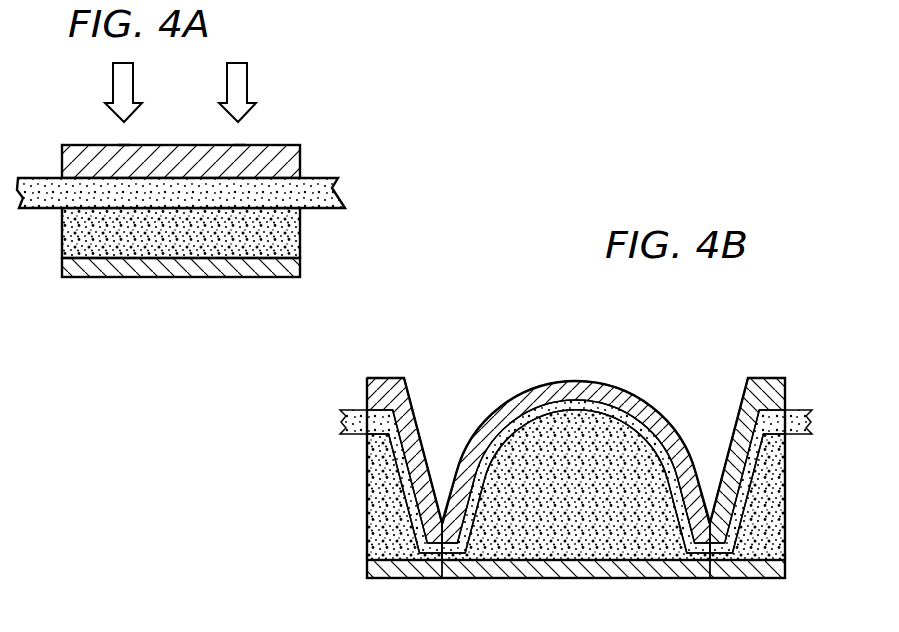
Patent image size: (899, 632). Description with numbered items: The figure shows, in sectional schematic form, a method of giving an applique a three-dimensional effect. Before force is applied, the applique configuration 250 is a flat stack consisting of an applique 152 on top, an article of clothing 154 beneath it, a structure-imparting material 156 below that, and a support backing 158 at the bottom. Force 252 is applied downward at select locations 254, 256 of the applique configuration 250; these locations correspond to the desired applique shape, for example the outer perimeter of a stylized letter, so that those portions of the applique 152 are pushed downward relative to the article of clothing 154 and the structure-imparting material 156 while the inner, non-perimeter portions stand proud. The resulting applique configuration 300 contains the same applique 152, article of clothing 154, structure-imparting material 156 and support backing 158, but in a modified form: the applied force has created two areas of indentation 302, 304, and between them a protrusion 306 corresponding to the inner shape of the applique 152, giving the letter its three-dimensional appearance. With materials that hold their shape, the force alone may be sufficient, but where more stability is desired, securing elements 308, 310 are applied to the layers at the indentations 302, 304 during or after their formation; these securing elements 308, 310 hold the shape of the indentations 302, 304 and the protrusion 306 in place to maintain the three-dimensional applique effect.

In FIG. 4A, the applique 152 is at (300, 158).
In FIG. 4B, the applique 152 is at (367, 395).
In FIG. 4A, the article of clothing 154 is at (346, 196).
In FIG. 4B, the article of clothing 154 is at (343, 428).
In FIG. 4A, the structure-imparting material 156 is at (62, 235).
In FIG. 4B, the structure-imparting material 156 is at (367, 497).
In FIG. 4A, the support backing 158 is at (300, 265).
In FIG. 4B, the support backing 158 is at (367, 567).
In FIG. 4A, the applique configuration 250 is at (378, 106).
In FIG. 4A, the force 252 is at (112, 80).
In FIG. 4A, the select location 254 is at (124, 145).
In FIG. 4A, the select location 256 is at (240, 145).
In FIG. 4B, the applique configuration 300 is at (662, 329).
In FIG. 4B, the area of indentation 302 is at (446, 446).
In FIG. 4B, the area of indentation 304 is at (708, 446).
In FIG. 4B, the protrusion 306 is at (583, 418).
In FIG. 4B, the securing element 308 is at (442, 578).
In FIG. 4B, the securing element 310 is at (710, 578).